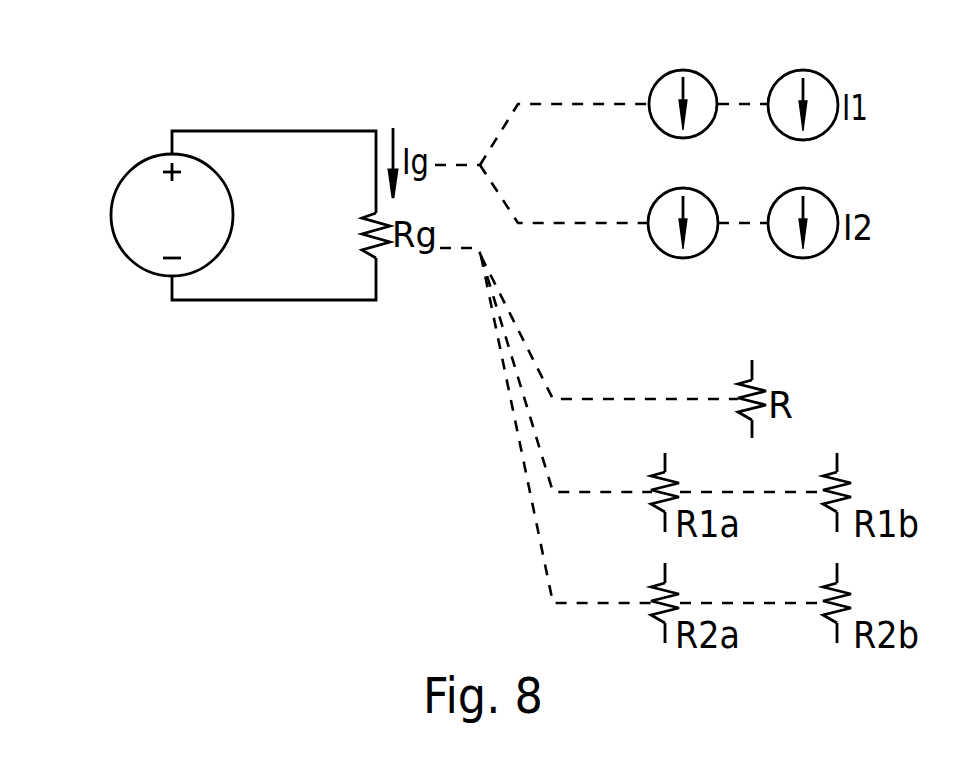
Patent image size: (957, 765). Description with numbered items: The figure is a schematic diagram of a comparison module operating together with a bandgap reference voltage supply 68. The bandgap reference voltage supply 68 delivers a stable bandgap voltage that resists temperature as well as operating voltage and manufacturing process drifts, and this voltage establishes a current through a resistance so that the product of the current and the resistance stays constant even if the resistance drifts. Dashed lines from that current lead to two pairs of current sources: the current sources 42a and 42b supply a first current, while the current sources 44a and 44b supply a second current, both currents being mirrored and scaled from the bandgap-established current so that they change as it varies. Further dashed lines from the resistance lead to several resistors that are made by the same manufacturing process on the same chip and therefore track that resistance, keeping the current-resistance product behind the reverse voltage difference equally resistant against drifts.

The bandgap reference voltage supply 68 is at (127, 252).
The current source 42a is at (667, 73).
The current source 42b is at (822, 77).
The current source 44a is at (667, 253).
The current source 44b is at (820, 253).